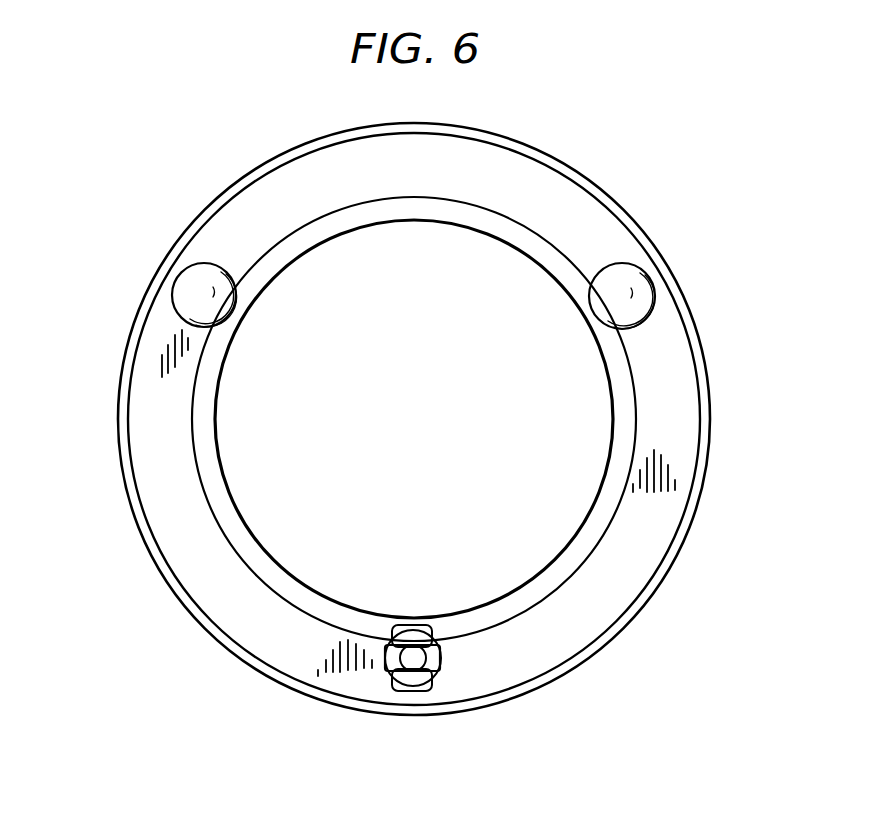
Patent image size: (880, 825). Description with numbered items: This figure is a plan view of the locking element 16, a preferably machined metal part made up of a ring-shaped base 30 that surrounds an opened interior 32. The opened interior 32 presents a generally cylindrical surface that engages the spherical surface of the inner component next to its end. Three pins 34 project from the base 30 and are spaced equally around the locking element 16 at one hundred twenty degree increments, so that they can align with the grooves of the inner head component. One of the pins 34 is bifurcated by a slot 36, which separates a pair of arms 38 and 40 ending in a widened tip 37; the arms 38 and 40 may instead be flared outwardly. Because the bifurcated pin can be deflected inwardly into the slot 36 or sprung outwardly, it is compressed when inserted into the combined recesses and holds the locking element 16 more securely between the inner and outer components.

The locking element 16 is at (148, 558).
The base 30 is at (574, 180).
The opened interior 32 is at (242, 512).
The pins 34 is at (416, 503).
The slot 36 is at (430, 661).
The widened tip 37 is at (403, 688).
The arm 38 is at (393, 640).
The arm 40 is at (427, 690).